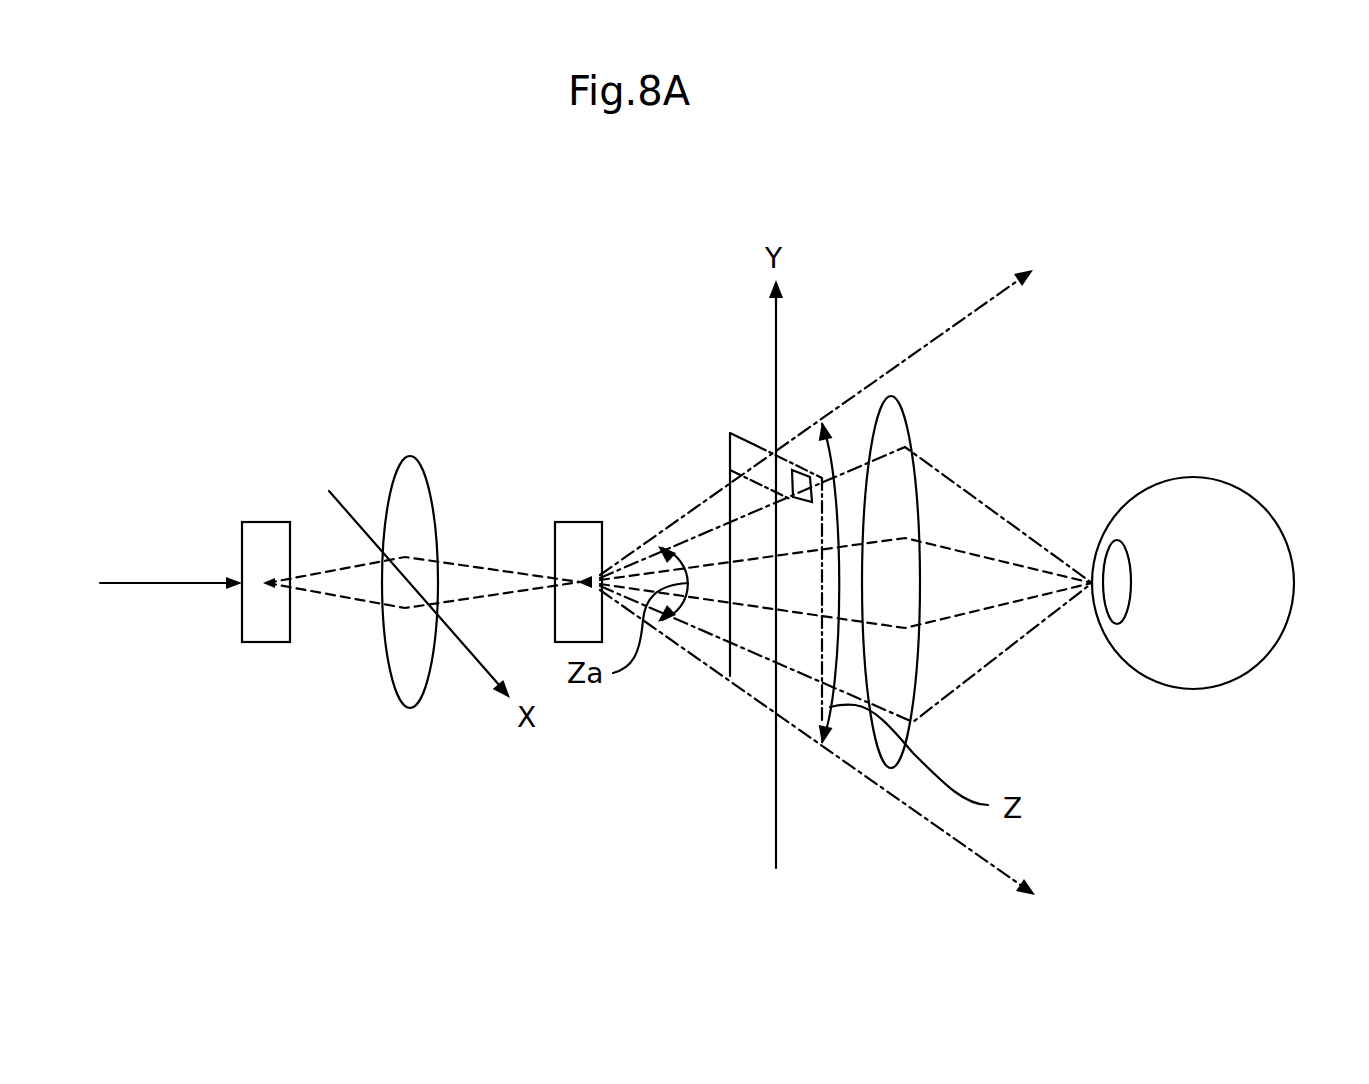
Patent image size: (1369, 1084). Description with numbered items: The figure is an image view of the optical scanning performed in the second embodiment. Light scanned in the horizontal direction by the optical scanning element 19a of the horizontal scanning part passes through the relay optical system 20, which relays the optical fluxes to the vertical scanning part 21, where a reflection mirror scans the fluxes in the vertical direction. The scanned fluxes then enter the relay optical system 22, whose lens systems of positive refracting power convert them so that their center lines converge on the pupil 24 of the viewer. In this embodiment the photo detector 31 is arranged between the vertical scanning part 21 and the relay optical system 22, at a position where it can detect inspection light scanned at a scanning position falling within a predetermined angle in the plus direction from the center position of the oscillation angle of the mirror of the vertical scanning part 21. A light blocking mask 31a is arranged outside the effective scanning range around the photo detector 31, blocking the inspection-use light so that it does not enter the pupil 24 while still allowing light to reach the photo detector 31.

The optical scanning element 19a is at (242, 547).
The relay optical system 20 is at (372, 690).
The vertical scanning part 21 is at (578, 522).
The relay optical system 22 is at (932, 411).
The pupil 24 is at (1115, 567).
The photo detector 31 is at (790, 478).
The light blocking mask 31a is at (730, 457).